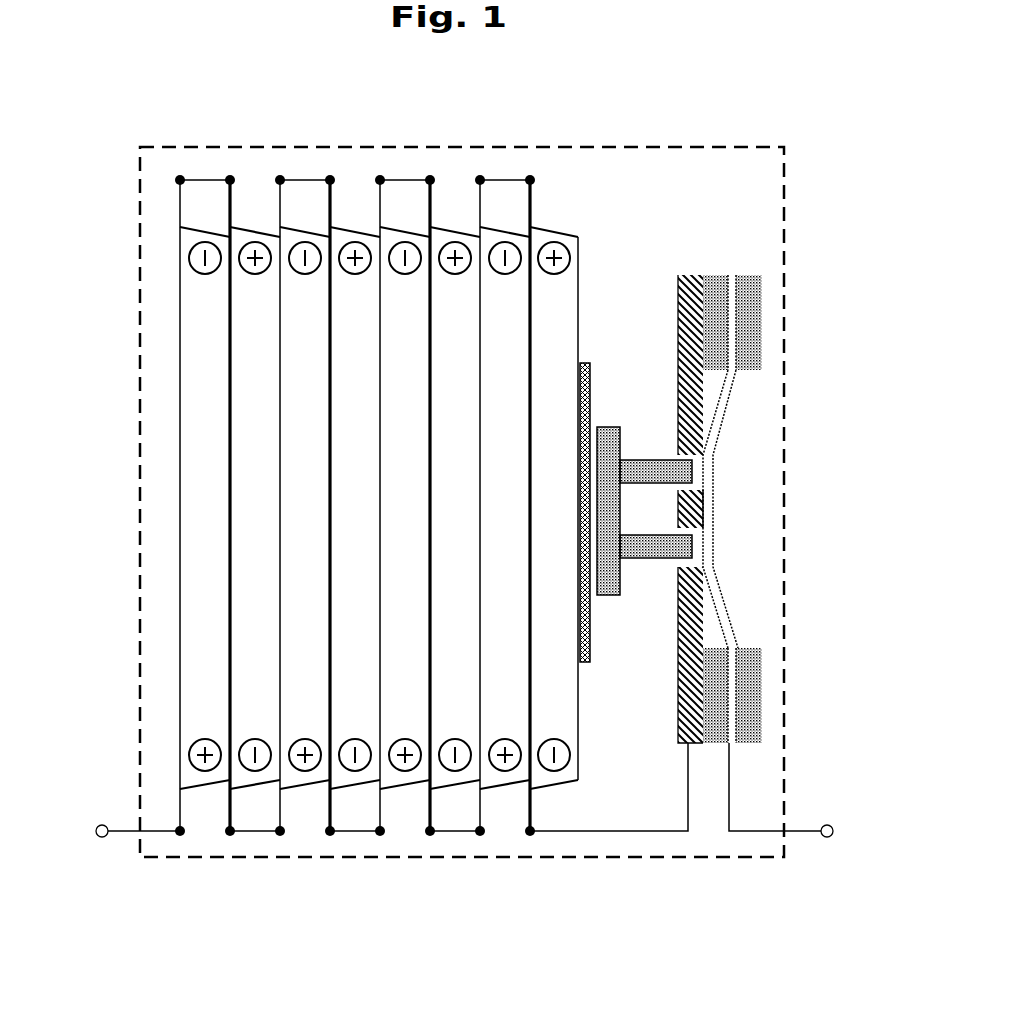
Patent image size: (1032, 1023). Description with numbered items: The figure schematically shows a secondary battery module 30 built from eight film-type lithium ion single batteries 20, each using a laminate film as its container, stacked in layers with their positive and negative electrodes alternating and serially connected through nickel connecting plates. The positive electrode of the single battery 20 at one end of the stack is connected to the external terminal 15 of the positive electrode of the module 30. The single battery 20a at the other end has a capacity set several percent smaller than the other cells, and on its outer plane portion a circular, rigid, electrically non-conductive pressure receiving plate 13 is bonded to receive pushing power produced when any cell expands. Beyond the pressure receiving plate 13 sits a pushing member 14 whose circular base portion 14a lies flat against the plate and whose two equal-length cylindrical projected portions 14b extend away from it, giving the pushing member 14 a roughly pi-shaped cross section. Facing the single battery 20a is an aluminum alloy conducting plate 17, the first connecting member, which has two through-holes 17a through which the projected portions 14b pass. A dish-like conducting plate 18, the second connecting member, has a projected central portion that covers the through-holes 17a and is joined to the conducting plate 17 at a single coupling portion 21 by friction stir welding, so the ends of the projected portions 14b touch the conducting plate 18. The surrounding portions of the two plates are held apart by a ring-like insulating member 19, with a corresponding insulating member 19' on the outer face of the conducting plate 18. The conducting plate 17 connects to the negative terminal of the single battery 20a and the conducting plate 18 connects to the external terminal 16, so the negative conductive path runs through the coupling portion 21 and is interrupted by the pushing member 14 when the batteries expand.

The secondary battery module 30 is at (371, 133).
The single battery 20 is at (202, 330).
The single battery at one end 20a is at (550, 323).
The external terminal of positive electrode 15 is at (136, 814).
The external terminal of negative electrode 16 is at (684, 790).
The pressure receiving plate 13 is at (591, 358).
The pushing member 14 is at (645, 377).
The base portion 14a is at (603, 597).
The projected portions 14b is at (640, 562).
The conducting plate 17 is at (783, 411).
The through-holes 17a is at (713, 455).
The conducting plate 18 is at (728, 273).
The insulating member 19 is at (739, 411).
The insulating member 19' is at (804, 411).
The coupling portion 21 is at (716, 510).